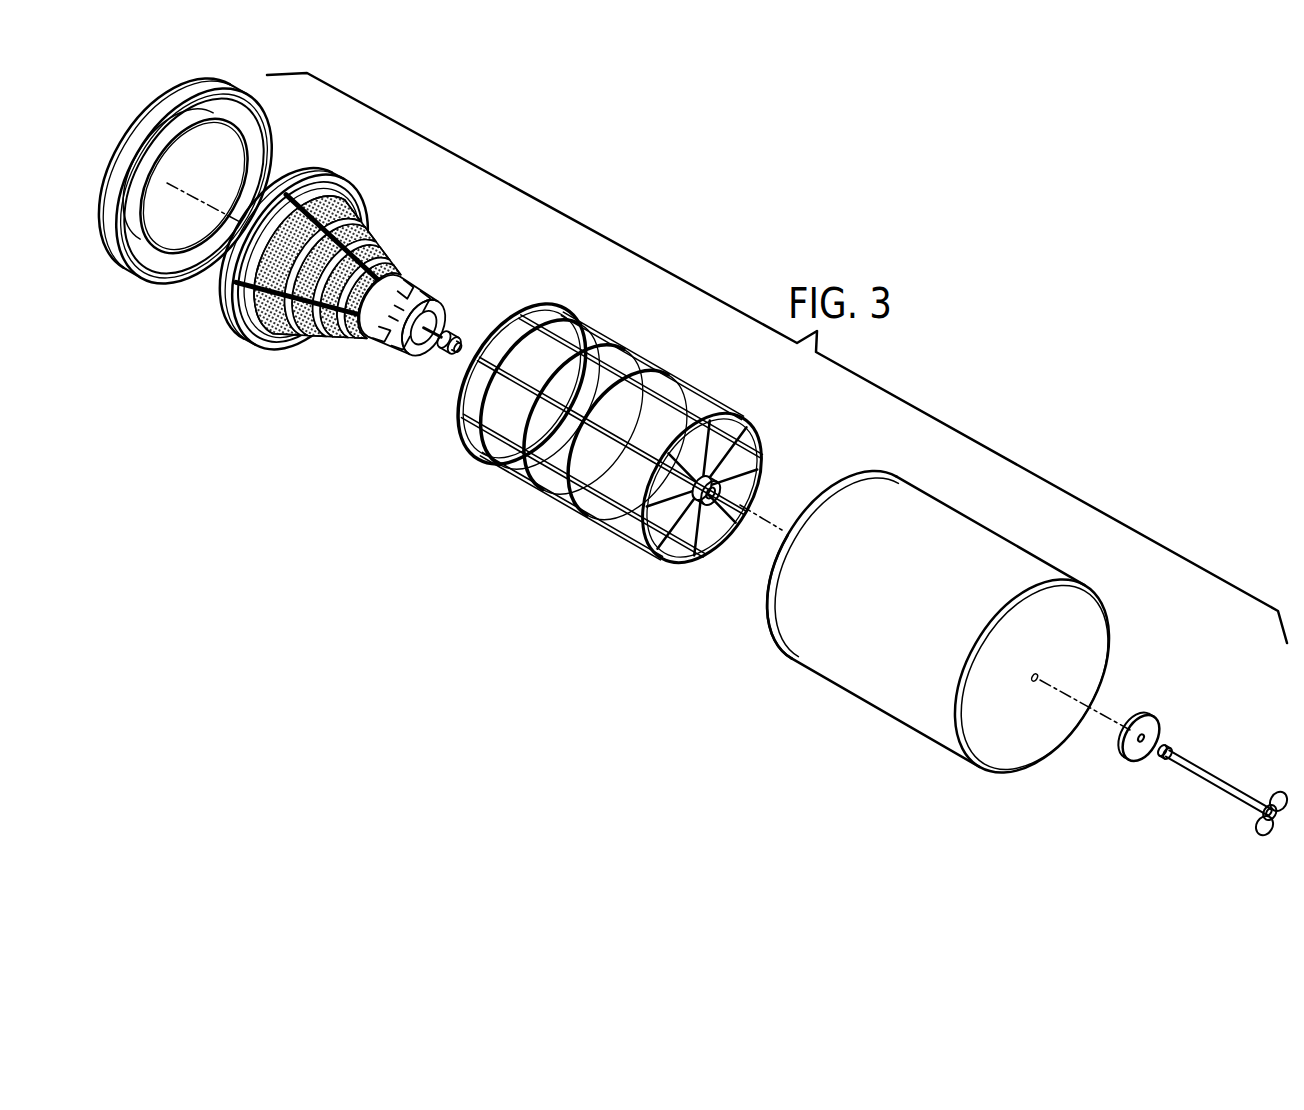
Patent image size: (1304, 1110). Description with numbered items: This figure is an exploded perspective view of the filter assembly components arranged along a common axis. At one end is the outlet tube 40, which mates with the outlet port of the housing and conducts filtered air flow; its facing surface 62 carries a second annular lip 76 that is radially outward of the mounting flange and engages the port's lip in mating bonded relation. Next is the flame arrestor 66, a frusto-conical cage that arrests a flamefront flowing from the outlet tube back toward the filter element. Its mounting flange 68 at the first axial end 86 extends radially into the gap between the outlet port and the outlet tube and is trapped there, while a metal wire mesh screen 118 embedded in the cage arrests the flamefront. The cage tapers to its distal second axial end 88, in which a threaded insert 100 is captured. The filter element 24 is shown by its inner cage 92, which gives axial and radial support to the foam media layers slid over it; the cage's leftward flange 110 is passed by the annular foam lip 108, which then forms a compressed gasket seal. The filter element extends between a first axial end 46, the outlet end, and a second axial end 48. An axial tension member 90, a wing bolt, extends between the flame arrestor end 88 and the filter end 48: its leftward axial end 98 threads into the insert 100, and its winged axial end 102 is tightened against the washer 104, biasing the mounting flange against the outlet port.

The filter element 24 is at (977, 523).
The outlet tube 40 is at (128, 127).
The first axial end 46 is at (795, 654).
The second axial end 48 is at (1003, 747).
The second facing surface 62 is at (253, 134).
The flame arrestor 66 is at (322, 318).
The mounting flange 68 is at (250, 306).
The second annular lip 76 is at (271, 153).
The first axial end 86 is at (258, 343).
The second axial end 88 is at (387, 343).
The axial tension member 90 is at (1215, 790).
The inner cage 92 is at (593, 517).
The leftward axial end 98 is at (1170, 748).
The threaded insert 100 is at (452, 352).
The winged axial end 102 is at (1278, 840).
The washer 104 is at (1128, 755).
The annular foam lip 108 is at (840, 485).
The leftward flange 110 is at (545, 300).
The metal wire mesh screen 118 is at (372, 219).